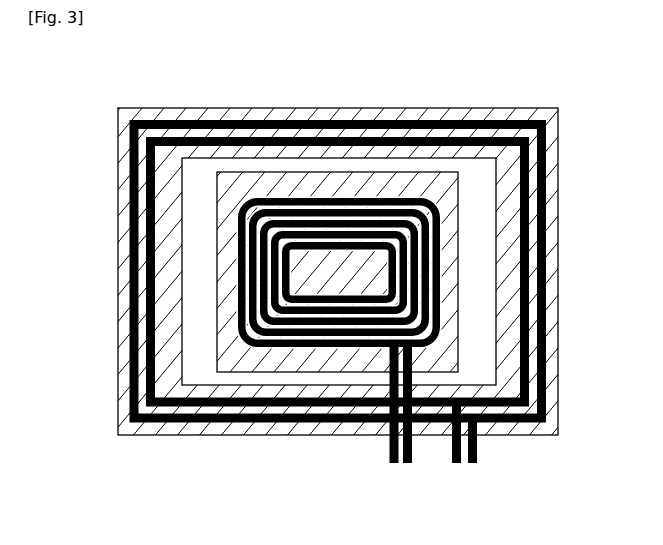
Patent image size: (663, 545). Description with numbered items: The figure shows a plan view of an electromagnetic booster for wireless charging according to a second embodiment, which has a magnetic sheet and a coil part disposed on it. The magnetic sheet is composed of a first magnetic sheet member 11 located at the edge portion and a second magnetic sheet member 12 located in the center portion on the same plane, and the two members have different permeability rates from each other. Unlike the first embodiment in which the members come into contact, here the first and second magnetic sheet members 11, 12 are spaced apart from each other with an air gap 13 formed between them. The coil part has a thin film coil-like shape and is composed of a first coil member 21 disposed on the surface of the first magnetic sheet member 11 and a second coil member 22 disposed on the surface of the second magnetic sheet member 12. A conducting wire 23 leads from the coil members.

The first magnetic sheet member 11 is at (168, 277).
The second magnetic sheet member 12 is at (292, 187).
The air gap 13 is at (483, 332).
The first coil member 21 is at (545, 272).
The second coil member 22 is at (358, 197).
The conducting wire 23 is at (405, 465).